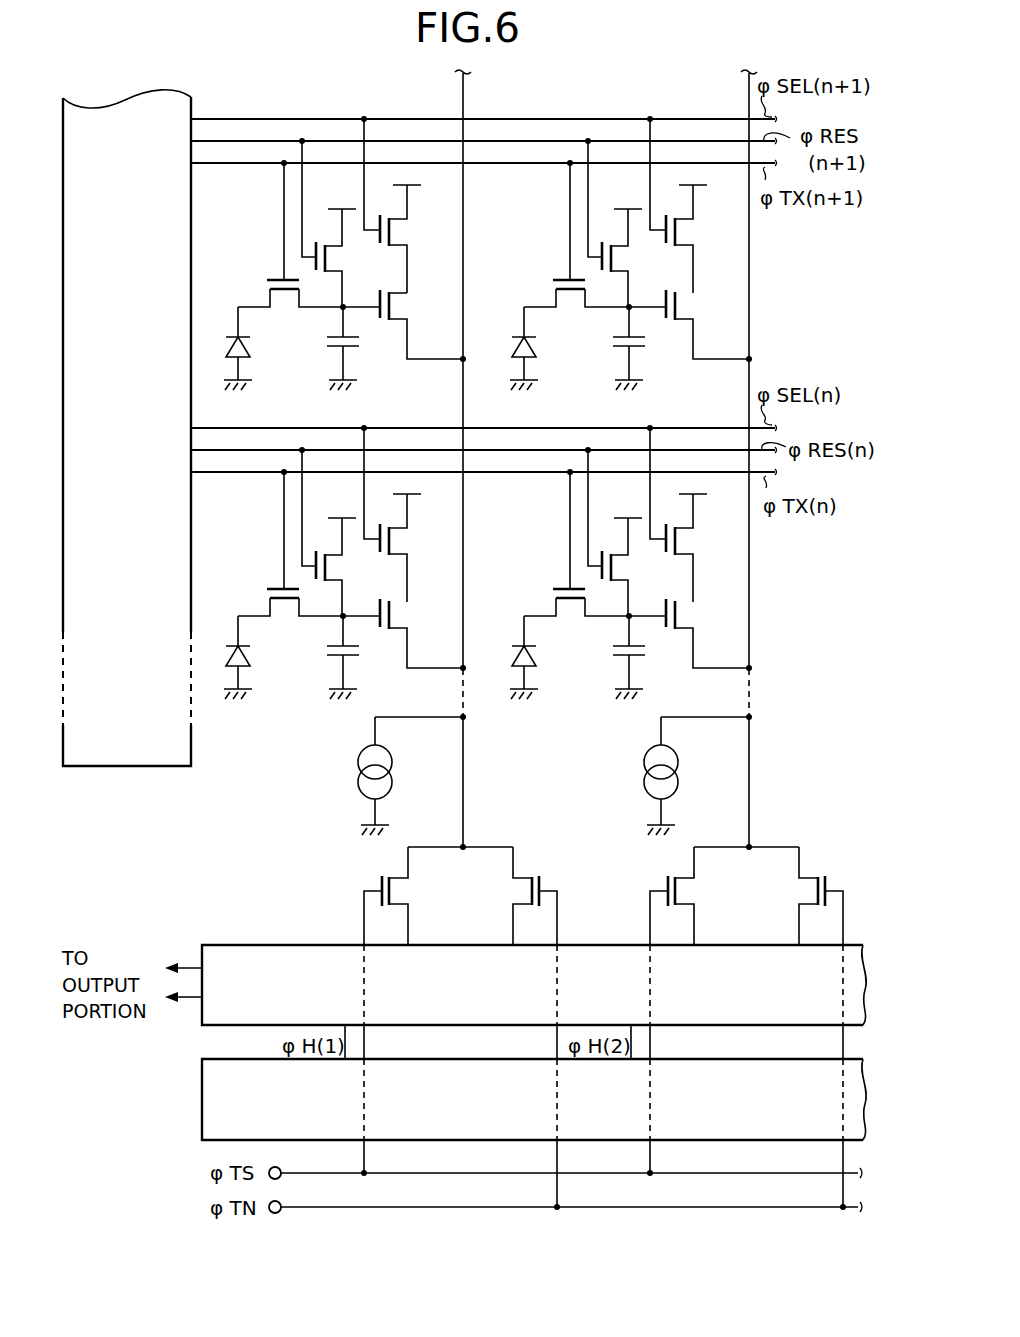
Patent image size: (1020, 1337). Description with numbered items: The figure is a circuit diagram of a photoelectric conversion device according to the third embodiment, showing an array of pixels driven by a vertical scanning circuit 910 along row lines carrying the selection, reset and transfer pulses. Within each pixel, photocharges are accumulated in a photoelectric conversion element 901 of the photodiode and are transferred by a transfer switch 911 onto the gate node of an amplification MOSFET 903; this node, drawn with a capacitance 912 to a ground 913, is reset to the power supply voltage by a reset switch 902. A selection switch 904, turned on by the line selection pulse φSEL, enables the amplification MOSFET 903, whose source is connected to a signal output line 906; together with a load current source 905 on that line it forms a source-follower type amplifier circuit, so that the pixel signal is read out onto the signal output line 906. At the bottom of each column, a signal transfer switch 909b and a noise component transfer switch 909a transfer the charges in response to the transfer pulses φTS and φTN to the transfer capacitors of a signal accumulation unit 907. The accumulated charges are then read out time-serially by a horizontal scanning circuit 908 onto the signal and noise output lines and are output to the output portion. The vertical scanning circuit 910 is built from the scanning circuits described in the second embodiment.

The photoelectric conversion element 901 is at (252, 345).
The reset switch 902 is at (322, 232).
The amplification MOSFET 903 is at (399, 303).
The selection switch 904 is at (399, 226).
The load current source 905 is at (358, 758).
The signal output line 906 is at (465, 226).
The signal accumulation unit 907 is at (246, 944).
The horizontal scanning circuit 908 is at (202, 1117).
The noise component transfer switch 909a is at (375, 881).
The signal transfer switch 909b is at (539, 875).
The vertical scanning circuit 910 is at (191, 108).
The transfer switch 911 is at (268, 276).
The floating diffusion capacitance 912 is at (340, 309).
The ground 913 is at (359, 339).